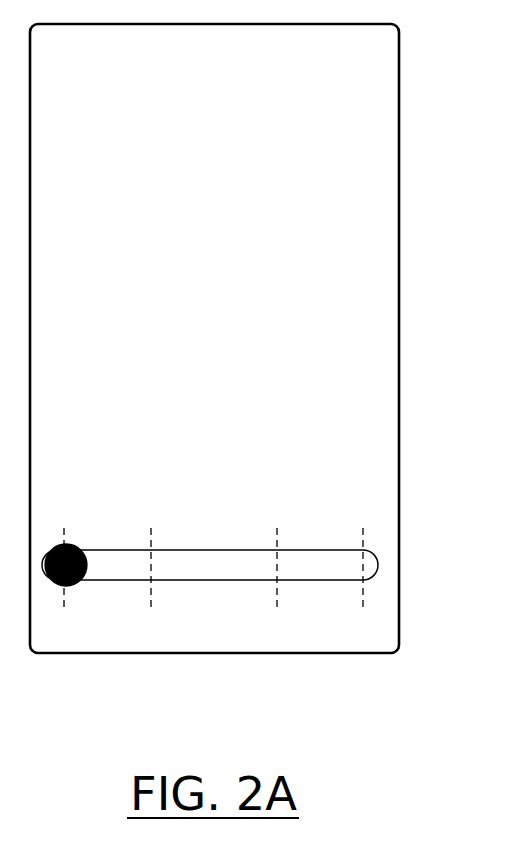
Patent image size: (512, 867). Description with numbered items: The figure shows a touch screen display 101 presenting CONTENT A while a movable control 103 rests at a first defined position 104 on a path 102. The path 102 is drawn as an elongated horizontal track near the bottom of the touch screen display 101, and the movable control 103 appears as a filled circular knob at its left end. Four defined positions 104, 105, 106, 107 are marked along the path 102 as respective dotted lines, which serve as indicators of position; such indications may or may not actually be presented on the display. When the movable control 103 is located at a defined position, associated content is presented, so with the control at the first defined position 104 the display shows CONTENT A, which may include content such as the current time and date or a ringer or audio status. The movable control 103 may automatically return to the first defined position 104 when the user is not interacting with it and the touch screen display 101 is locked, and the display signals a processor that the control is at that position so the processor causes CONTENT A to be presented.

The touch screen display 101 is at (399, 68).
The path 102 is at (323, 580).
The movable control 103 is at (74, 584).
The first defined position 104 is at (64, 558).
The defined position 105 is at (151, 558).
The defined position 106 is at (277, 558).
The defined position 107 is at (363, 558).